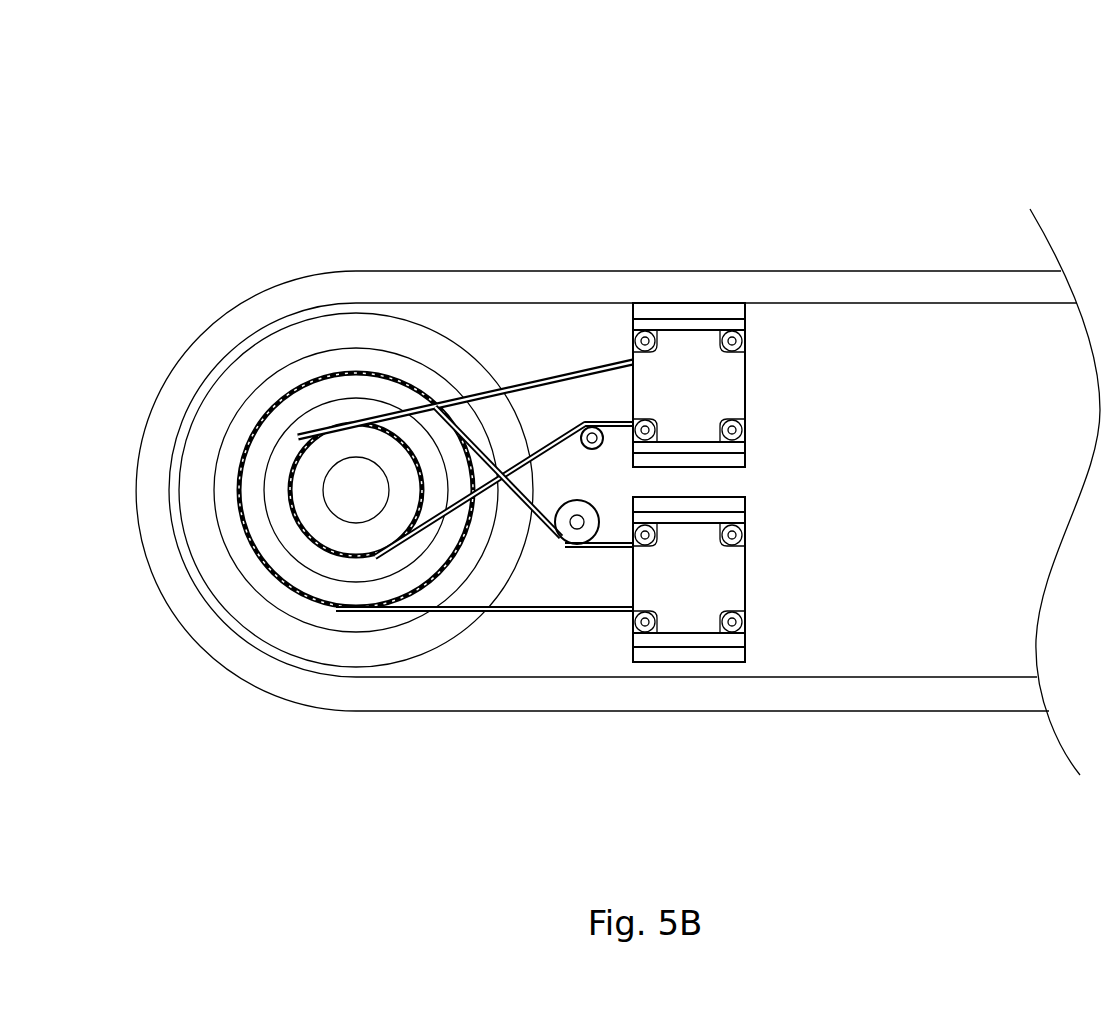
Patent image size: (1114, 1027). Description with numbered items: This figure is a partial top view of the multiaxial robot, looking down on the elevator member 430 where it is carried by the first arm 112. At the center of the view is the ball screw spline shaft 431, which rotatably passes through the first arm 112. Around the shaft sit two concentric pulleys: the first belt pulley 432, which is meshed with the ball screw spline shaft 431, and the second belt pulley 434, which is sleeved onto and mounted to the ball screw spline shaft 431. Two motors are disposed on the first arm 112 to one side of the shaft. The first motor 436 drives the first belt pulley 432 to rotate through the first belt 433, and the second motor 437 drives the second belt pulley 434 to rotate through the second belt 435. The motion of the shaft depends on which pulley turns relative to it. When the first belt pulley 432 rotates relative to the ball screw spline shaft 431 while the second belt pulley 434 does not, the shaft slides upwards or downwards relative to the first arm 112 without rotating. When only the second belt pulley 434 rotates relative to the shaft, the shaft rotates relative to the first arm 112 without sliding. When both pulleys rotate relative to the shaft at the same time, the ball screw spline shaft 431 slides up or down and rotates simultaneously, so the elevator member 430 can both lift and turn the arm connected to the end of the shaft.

The first arm 112 is at (895, 330).
The elevator member 430 is at (820, 78).
The ball screw spline shaft 431 is at (351, 482).
The first belt pulley 432 is at (315, 463).
The first belt 433 is at (577, 370).
The second belt pulley 434 is at (267, 435).
The second belt 435 is at (490, 447).
The first motor 436 is at (680, 373).
The second motor 437 is at (725, 578).